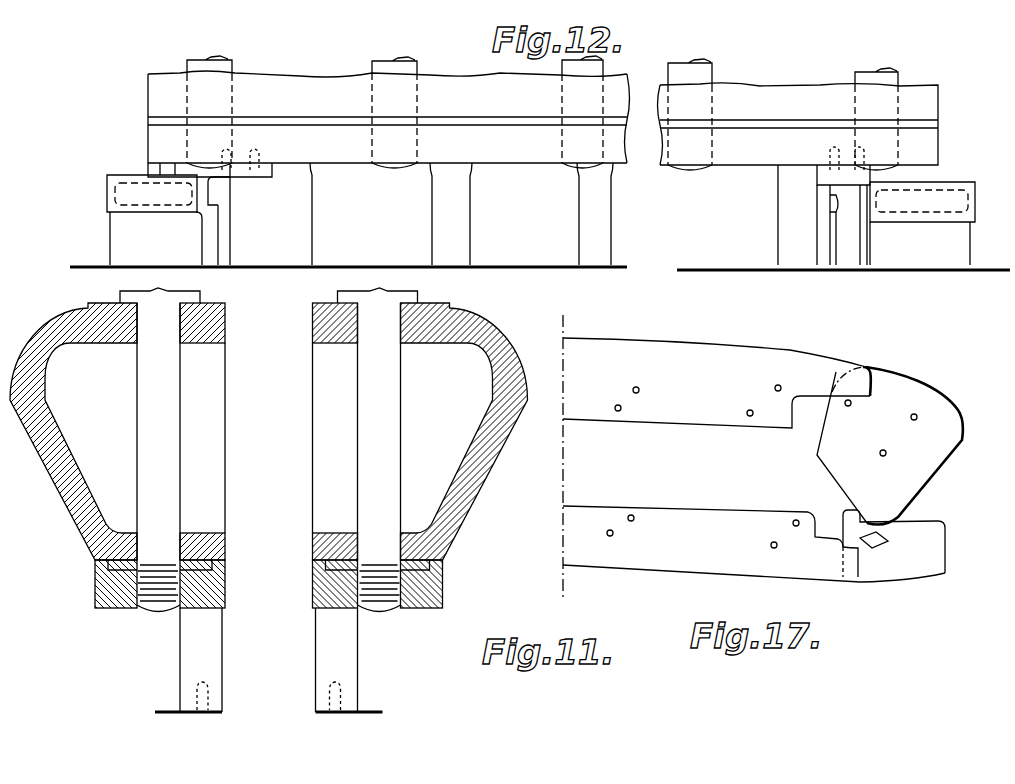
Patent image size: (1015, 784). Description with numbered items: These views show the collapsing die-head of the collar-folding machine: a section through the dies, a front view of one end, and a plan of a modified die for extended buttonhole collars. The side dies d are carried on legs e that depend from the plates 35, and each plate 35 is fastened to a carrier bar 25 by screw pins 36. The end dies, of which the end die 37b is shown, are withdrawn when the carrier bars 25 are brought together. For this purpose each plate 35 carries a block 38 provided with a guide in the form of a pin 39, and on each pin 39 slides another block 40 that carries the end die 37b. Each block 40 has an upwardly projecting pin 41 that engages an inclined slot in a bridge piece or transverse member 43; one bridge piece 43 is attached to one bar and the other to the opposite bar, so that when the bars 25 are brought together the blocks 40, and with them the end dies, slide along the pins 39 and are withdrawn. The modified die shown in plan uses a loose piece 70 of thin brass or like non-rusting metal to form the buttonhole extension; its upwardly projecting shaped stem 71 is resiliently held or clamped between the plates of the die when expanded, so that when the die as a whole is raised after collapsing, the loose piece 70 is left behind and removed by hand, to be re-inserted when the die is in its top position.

In FIG. 12, the bar 25 is at (617, 106).
In FIG. 11, the bar 25 is at (62, 478).
In FIG. 12, the plate 35 is at (352, 155).
In FIG. 11, the plate 35 is at (118, 603).
In FIG. 12, the screw pin 36 is at (542, 113).
In FIG. 11, the screw pin 36 is at (170, 456).
In FIG. 12, the end die 37b is at (82, 270).
In FIG. 12, the block 38 is at (298, 233).
In FIG. 12, the pin 39 is at (222, 190).
In FIG. 12, the block 40 is at (118, 228).
In FIG. 12, the pin 41 is at (150, 168).
In FIG. 12, the bridge piece 43 is at (243, 163).
In FIG. 17, the loose piece 70 is at (892, 571).
In FIG. 17, the stem 71 is at (883, 533).
In FIG. 12, the side die d is at (508, 270).
In FIG. 11, the side die d is at (172, 712).
In FIG. 17, the side die d is at (772, 355).
In FIG. 12, the leg e is at (583, 208).
In FIG. 11, the leg e is at (222, 645).